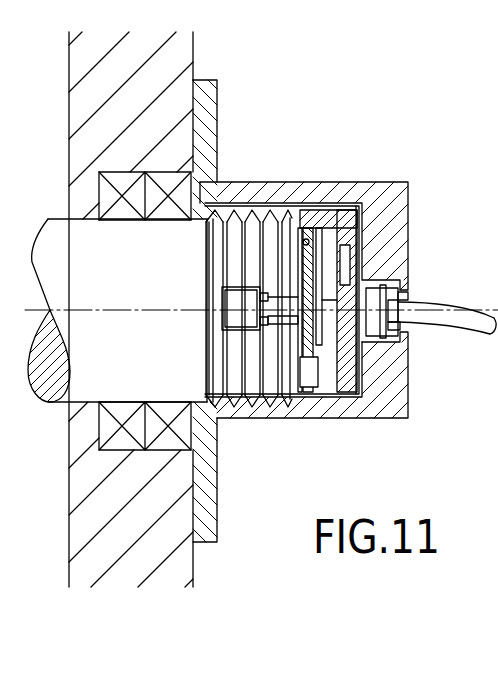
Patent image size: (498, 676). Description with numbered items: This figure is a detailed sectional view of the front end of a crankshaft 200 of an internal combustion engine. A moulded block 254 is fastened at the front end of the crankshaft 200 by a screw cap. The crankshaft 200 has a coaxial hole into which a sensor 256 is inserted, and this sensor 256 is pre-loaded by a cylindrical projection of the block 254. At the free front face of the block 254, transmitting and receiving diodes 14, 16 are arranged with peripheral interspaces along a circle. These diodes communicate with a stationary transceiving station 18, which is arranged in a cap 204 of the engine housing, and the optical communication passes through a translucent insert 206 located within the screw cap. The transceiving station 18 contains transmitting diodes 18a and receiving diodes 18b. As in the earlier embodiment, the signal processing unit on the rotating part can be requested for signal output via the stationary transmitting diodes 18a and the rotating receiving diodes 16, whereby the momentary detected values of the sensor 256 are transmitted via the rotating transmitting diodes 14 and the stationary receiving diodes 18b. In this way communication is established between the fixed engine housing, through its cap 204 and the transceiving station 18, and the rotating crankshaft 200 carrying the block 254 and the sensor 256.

The crankshaft 200 is at (48, 228).
The cap 204 is at (377, 197).
The translucent insert 206 is at (352, 368).
The moulded block 254 is at (323, 276).
The sensor 256 is at (222, 300).
The transmitting diodes 14 is at (406, 301).
The receiving diodes 16 is at (335, 276).
The transceiving station 18 is at (367, 338).
The transmitting diodes 18a is at (393, 326).
The receiving diodes 18b is at (410, 283).